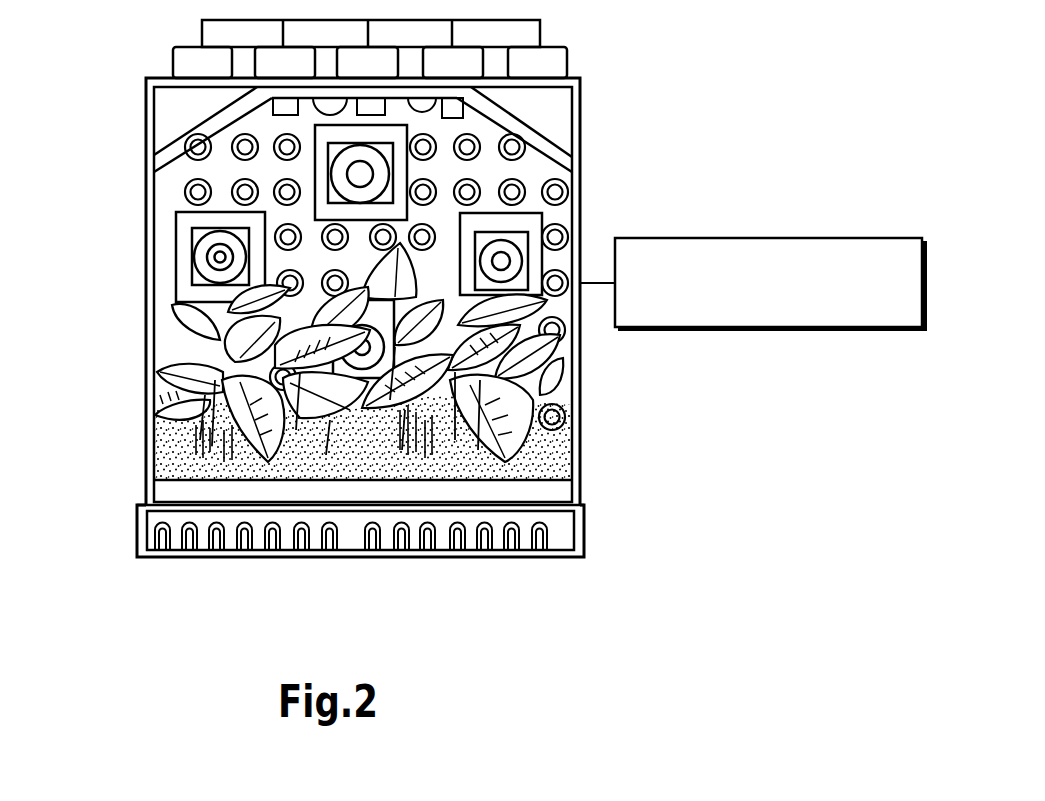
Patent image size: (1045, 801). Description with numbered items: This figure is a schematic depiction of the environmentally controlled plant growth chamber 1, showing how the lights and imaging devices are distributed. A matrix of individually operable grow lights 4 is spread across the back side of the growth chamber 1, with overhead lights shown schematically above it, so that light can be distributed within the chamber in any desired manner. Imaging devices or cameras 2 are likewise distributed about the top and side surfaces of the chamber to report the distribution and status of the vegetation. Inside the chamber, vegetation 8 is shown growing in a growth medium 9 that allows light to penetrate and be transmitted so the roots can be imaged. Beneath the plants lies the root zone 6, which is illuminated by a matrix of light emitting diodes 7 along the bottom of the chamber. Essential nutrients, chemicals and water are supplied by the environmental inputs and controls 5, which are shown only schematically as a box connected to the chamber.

The plant growth chamber 1 is at (146, 150).
The imaging devices 2 is at (219, 258).
The grow lights 4 is at (558, 62).
The environmental inputs and controls 5 is at (775, 327).
The root zone 6 is at (580, 503).
The light emitting diodes 7 is at (158, 533).
The vegetation 8 is at (165, 354).
The growth medium 9 is at (146, 438).